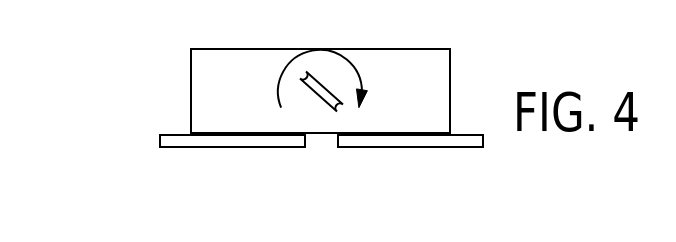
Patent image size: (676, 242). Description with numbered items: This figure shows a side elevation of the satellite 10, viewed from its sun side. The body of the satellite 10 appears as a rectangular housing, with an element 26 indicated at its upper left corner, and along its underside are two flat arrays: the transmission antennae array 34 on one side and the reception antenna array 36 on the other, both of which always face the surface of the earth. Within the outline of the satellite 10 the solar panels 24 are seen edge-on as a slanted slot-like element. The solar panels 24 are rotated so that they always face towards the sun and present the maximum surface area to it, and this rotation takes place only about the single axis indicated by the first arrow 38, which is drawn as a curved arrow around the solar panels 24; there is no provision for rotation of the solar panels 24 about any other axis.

The satellite 10 is at (120, 143).
The solar panels 24 is at (310, 72).
The housing 26 is at (191, 59).
The transmission antennae array 34 is at (442, 140).
The reception antenna array 36 is at (218, 143).
The first arrow 38 is at (363, 79).